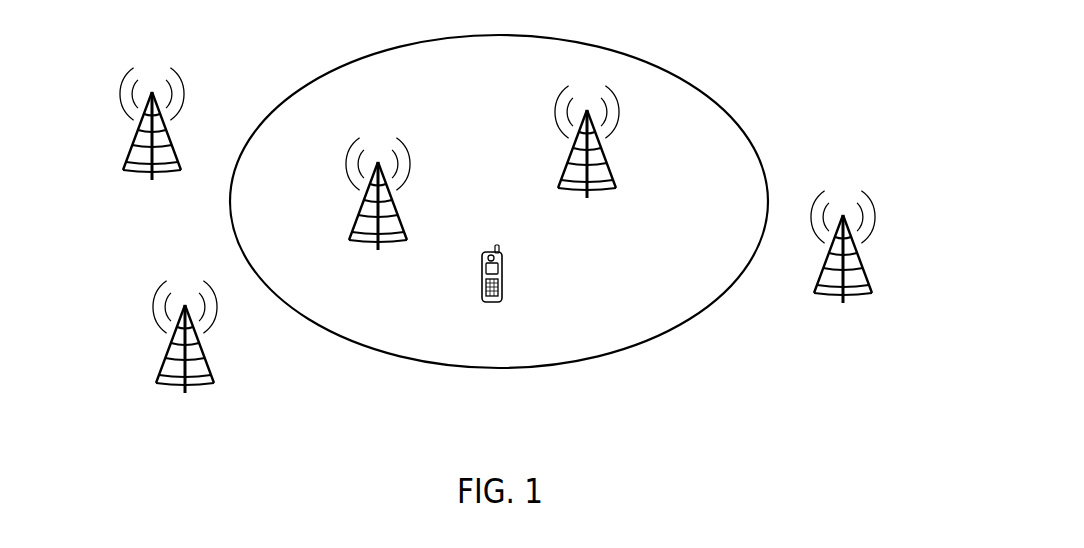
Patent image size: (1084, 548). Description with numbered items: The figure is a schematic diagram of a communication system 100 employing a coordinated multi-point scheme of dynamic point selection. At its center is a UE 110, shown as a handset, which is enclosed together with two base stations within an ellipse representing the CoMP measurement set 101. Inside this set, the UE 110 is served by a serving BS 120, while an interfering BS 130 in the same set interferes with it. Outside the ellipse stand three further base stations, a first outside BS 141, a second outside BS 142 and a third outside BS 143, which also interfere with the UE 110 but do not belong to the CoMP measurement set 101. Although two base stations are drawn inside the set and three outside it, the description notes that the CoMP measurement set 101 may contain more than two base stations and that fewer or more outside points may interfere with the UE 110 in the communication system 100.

The communication system 100 is at (230, 26).
The CoMP measurement set 101 is at (563, 36).
The UE 110 is at (488, 301).
The serving BS 120 is at (360, 222).
The interfering BS 130 is at (608, 170).
The outside BS 141 is at (145, 159).
The outside BS 142 is at (192, 370).
The outside BS 143 is at (840, 284).